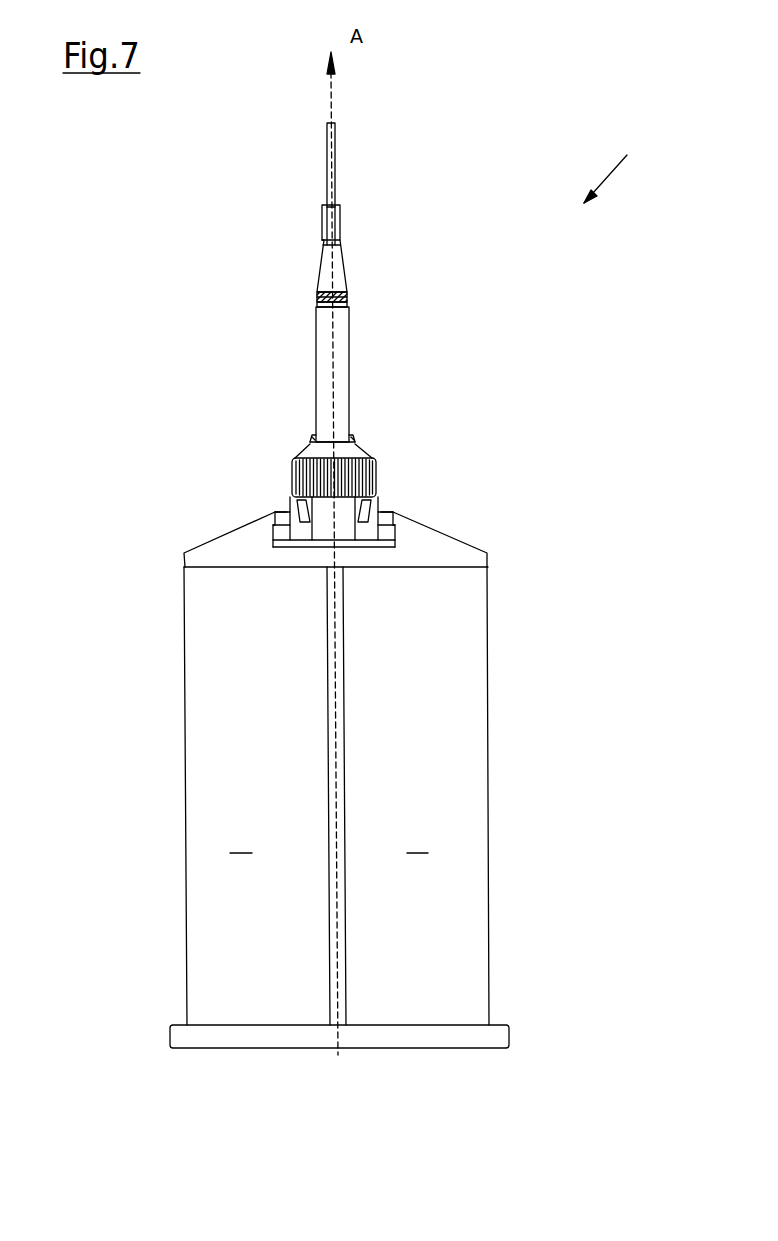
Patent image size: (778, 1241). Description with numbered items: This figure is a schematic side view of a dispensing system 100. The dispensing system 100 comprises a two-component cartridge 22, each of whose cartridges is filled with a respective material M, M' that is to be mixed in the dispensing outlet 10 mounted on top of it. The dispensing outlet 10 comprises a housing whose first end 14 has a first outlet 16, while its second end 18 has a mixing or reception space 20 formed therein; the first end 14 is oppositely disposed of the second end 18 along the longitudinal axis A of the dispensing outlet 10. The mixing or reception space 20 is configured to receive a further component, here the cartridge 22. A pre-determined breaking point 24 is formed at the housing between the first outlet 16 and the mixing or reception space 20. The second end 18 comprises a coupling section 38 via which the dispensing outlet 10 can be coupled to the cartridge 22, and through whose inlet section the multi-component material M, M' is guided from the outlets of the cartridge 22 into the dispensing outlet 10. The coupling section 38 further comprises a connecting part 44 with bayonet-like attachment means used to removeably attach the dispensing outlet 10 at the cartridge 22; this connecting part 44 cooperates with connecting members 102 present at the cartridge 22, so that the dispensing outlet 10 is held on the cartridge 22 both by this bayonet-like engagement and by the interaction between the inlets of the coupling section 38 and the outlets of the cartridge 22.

The dispensing system 100 is at (417, 566).
The dispensing outlet 10 is at (360, 373).
The first end 14 is at (340, 255).
The first outlet 16 is at (333, 121).
The second end 18 is at (352, 507).
The mixing or reception space 20 is at (340, 413).
The cartridge 22 is at (465, 737).
The pre-determined breaking point 24 is at (347, 297).
The coupling section 38 is at (288, 500).
The connecting part 44 is at (280, 537).
The connecting members 102 is at (270, 502).